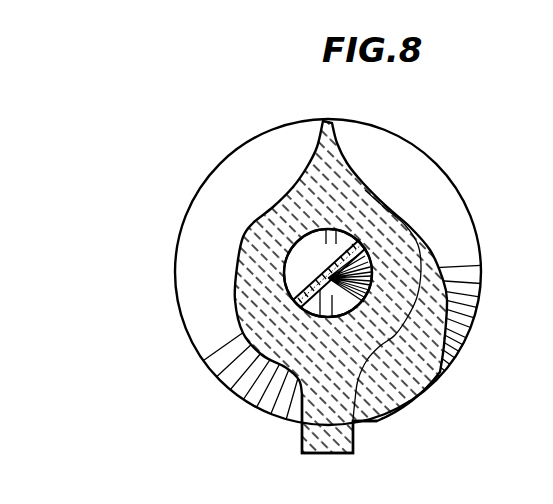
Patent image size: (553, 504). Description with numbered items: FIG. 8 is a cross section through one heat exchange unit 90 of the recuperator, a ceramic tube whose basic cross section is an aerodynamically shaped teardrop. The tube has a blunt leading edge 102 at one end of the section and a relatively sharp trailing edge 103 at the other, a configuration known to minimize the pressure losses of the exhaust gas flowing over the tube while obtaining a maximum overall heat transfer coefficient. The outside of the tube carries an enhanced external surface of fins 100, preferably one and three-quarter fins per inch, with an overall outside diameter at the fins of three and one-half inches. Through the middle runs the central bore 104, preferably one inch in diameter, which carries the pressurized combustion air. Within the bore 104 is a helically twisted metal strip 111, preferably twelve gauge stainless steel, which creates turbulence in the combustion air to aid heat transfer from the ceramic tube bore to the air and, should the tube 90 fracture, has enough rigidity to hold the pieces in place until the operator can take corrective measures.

The heat exchange unit 90 is at (440, 157).
The fins 100 is at (459, 226).
The blunt leading edge 102 is at (350, 447).
The sharp trailing edge 103 is at (334, 135).
The central bore 104 is at (292, 266).
The helically twisted metal strip 111 is at (300, 252).